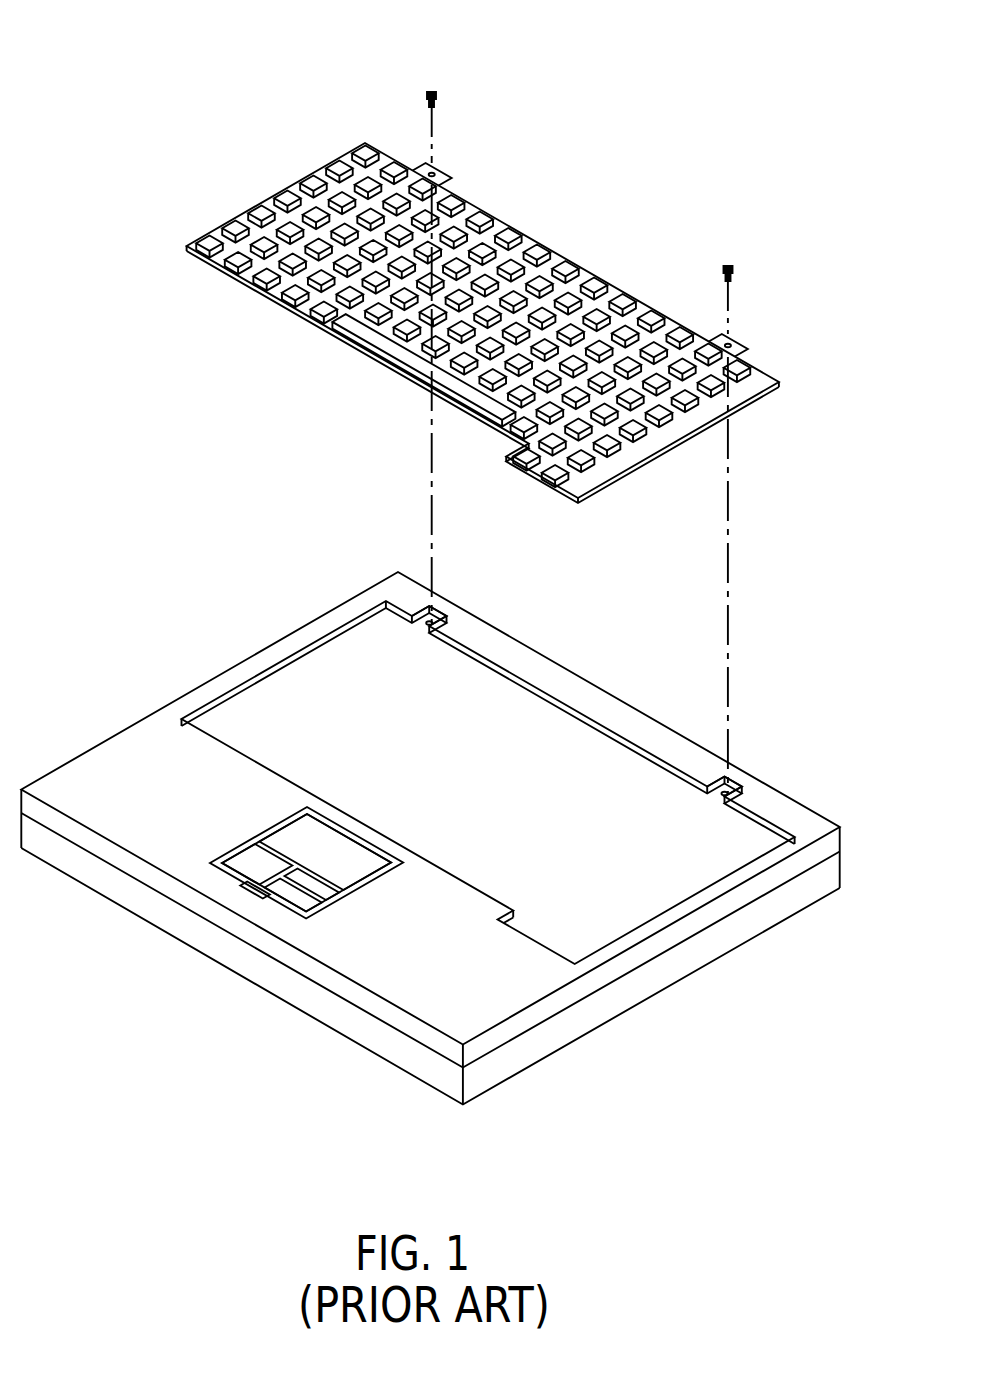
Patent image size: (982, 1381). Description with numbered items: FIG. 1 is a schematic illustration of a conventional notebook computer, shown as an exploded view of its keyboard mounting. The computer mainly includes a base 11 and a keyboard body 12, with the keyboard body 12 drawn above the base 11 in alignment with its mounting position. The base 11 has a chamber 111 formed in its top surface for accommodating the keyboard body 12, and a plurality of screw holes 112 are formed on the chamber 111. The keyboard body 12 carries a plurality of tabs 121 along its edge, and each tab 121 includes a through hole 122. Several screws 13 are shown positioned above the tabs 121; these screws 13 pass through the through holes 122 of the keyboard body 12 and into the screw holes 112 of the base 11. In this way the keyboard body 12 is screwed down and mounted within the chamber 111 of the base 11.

The base 11 is at (208, 667).
The chamber 111 is at (644, 893).
The screw holes 112 is at (745, 790).
The keyboard body 12 is at (294, 173).
The tabs 121 is at (426, 173).
The through hole 122 is at (453, 183).
The screws 13 is at (440, 95).